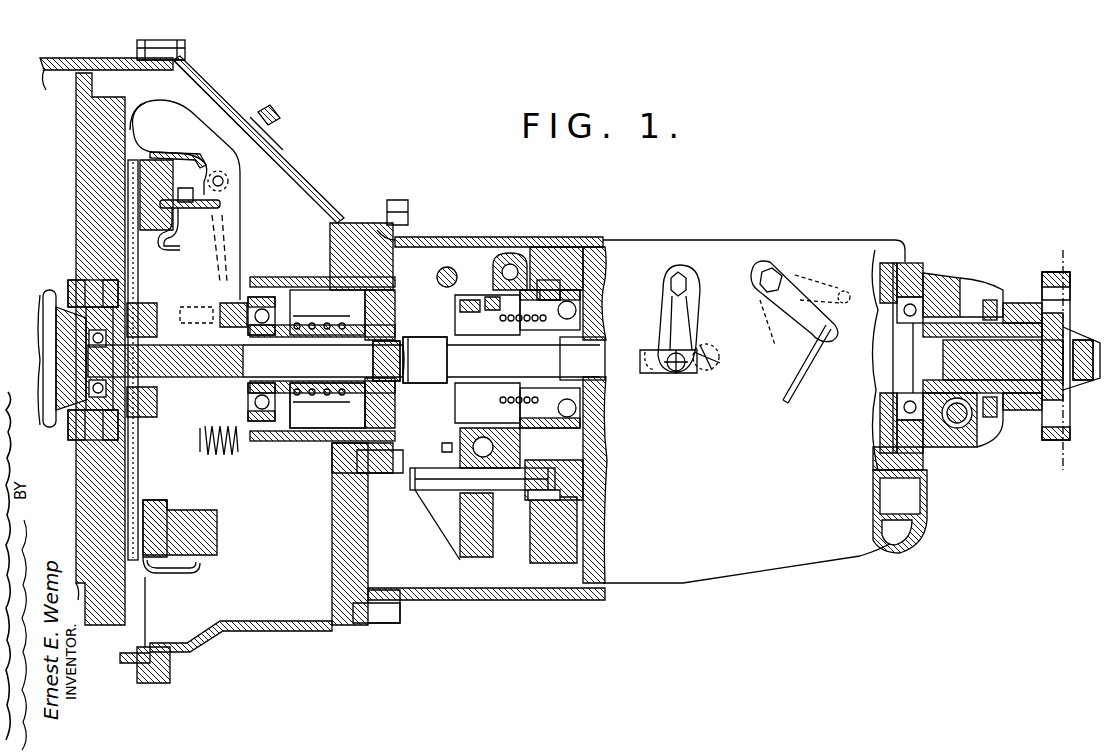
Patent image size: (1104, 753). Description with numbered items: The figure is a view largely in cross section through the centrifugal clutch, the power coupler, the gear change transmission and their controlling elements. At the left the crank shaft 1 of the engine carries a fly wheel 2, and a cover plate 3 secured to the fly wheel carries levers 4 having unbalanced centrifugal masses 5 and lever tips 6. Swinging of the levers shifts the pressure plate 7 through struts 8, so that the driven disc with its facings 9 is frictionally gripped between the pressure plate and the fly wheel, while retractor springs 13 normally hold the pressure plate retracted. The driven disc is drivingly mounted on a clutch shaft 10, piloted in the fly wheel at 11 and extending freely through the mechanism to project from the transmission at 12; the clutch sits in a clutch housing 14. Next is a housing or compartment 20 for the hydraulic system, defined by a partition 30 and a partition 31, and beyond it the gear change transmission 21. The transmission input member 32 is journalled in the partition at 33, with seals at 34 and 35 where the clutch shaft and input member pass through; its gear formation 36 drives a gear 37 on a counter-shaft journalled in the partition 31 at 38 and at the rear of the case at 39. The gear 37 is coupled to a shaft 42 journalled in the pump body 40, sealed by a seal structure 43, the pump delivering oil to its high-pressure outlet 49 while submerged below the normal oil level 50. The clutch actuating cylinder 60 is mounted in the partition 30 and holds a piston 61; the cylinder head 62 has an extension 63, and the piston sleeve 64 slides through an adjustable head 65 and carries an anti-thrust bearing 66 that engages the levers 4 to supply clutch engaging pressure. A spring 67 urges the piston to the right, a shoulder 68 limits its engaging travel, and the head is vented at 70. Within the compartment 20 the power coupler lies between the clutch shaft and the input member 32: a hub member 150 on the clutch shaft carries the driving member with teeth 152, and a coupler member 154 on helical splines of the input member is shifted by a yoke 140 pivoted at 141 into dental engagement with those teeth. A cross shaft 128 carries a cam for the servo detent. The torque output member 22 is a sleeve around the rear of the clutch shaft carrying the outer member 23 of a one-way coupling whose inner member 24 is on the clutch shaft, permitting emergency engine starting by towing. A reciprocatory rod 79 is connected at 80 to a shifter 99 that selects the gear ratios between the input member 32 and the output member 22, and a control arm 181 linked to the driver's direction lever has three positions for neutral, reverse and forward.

The crank shaft 1 is at (62, 297).
The fly wheel 2 is at (77, 165).
The cover plate 3 is at (200, 558).
The levers 4 is at (213, 147).
The unbalanced centrifugal masses 5 is at (162, 126).
The lever tips 6 is at (205, 300).
The pressure plate 7 is at (177, 406).
The struts 8 is at (212, 214).
The facings of the clutch driven disc 9 is at (128, 190).
The clutch shaft 10 is at (344, 360).
The pilot of the clutch shaft 11 is at (62, 432).
The projecting end of the clutch shaft 12 is at (1060, 395).
The retractor springs 13 is at (222, 457).
The clutch housing 14 is at (204, 84).
The housing or compartment 20 is at (462, 253).
The gear change transmission 21 is at (737, 246).
The torque output member 22 is at (927, 318).
The outer member of the one-way drive coupling 23 is at (1040, 300).
The inner member of the one-way coupling 24 is at (1064, 325).
The partition 30 is at (334, 549).
The partition 31 is at (543, 599).
The transmission input member 32 is at (597, 358).
The journal of the input member 33 is at (603, 300).
The seal 34 is at (386, 361).
The seal 35 is at (568, 253).
The gear formation 36 is at (603, 398).
The gear 37 is at (600, 534).
The counter-shaft journal 38 is at (560, 498).
The rear counter-shaft journal 39 is at (908, 502).
The pump body 40 is at (512, 560).
The pump shaft 42 is at (412, 488).
The seal structure 43 is at (545, 507).
The pump outlet 49 is at (442, 448).
The normal oil level 50 is at (421, 430).
The clutch actuating cylinder 60 is at (318, 284).
The piston 61 is at (331, 395).
The head of the cylinder 62 is at (404, 233).
The extension 63 is at (357, 340).
The sleeve 64 is at (327, 407).
The adjustable head 65 is at (264, 295).
The anti-thrust bearing 66 is at (248, 409).
The spring 67 is at (321, 312).
The shoulder 68 is at (321, 410).
The vent 70 is at (400, 284).
The reciprocatory rod 79 is at (662, 385).
The connection of rod to shifter 80 is at (698, 373).
The shifter 99 is at (667, 319).
The cross shaft 128 is at (457, 276).
The yoke 140 is at (540, 268).
The pivot of the yoke 141 is at (508, 262).
The hub member 150 is at (425, 360).
The teeth 152 is at (474, 300).
The coupler member 154 is at (533, 325).
The control arm 181 is at (800, 293).